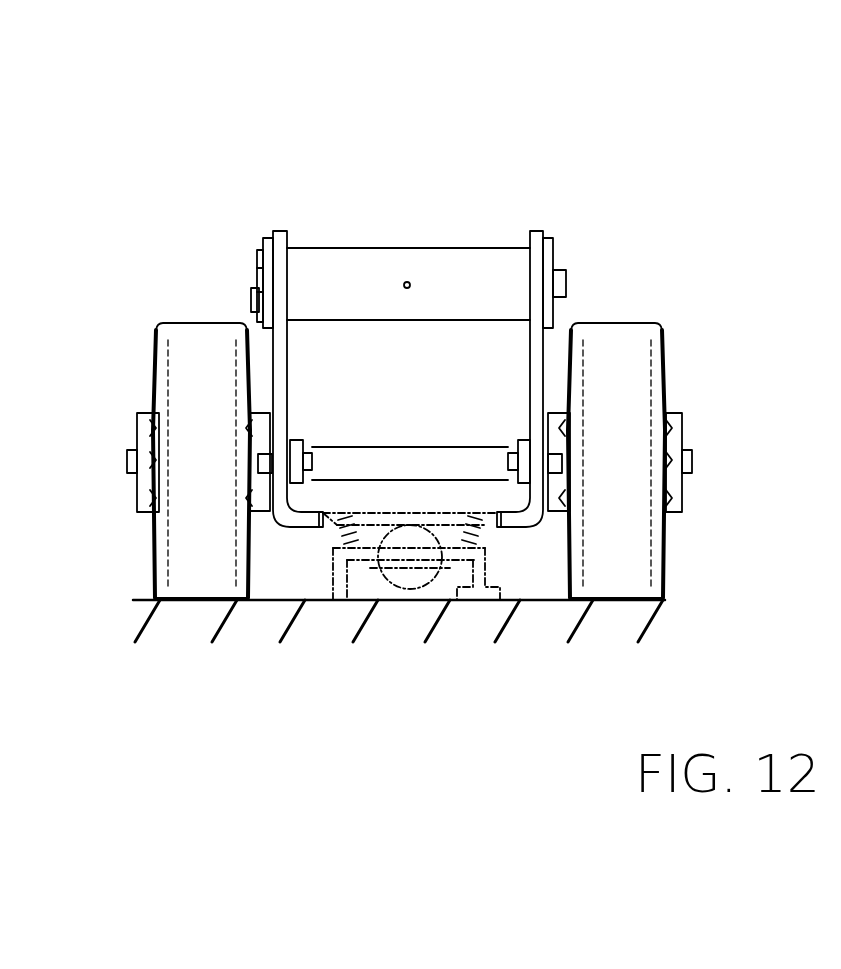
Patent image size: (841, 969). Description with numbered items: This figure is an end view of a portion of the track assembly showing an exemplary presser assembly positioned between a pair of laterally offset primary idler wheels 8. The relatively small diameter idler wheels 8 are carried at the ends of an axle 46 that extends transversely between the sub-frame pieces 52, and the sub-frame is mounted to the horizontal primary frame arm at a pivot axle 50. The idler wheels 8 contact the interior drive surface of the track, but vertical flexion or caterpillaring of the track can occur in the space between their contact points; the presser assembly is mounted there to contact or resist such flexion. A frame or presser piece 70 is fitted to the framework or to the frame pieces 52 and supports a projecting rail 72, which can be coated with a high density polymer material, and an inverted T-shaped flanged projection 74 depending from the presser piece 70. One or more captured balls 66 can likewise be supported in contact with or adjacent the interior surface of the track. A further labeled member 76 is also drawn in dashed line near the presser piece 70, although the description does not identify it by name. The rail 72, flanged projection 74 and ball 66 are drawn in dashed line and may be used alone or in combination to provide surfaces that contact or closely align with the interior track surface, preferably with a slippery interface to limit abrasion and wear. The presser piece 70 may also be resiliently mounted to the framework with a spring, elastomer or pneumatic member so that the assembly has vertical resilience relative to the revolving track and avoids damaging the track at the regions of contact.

The primary intermediate idler wheel 8 is at (198, 348).
The axle 46 is at (433, 462).
The pivot axle 50 is at (367, 273).
The sub-frame piece 52 is at (286, 363).
The captured ball 66 is at (408, 588).
The presser piece 70 is at (485, 550).
The rail 72 is at (337, 575).
The flanged projection 74 is at (483, 598).
The mounting flange 76 is at (335, 532).